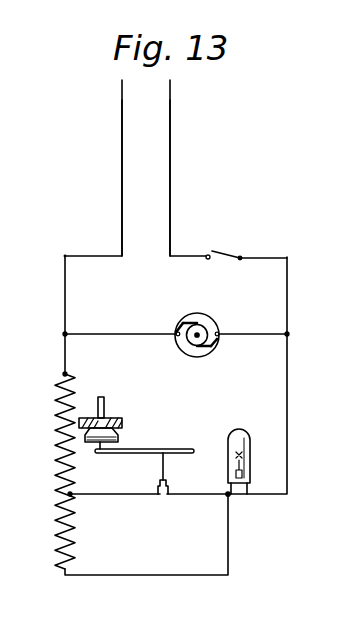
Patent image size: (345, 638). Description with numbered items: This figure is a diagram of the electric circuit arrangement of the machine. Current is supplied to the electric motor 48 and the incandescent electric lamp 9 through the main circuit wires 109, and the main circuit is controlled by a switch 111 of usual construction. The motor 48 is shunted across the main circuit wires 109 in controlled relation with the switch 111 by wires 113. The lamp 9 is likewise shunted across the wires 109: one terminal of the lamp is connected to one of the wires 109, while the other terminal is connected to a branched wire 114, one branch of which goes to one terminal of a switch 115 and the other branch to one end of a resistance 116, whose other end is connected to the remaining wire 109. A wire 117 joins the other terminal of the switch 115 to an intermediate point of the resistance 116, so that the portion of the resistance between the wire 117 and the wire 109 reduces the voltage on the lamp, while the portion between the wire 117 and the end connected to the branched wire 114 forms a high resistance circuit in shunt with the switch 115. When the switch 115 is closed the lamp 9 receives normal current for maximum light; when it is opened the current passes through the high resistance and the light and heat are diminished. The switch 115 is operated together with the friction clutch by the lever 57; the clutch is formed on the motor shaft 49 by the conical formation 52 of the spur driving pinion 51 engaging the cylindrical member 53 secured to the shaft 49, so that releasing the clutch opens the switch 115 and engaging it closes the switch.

The incandescent electric lamp 9 is at (250, 433).
The electric motor 48 is at (208, 313).
The motor shaft 49 is at (114, 387).
The spur driving pinion 51 is at (86, 439).
The conical formation 52 is at (119, 436).
The cylindrical member 53 is at (112, 419).
The lever 57 is at (184, 449).
The main circuit wires 109 is at (122, 156).
The switch 111 is at (222, 254).
The wires 113 is at (116, 333).
The branched wire 114 is at (229, 495).
The switch 115 is at (170, 486).
The resistance 116 is at (57, 466).
The wire 117 is at (108, 494).